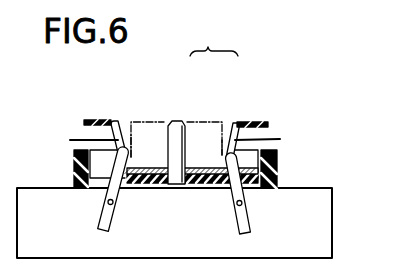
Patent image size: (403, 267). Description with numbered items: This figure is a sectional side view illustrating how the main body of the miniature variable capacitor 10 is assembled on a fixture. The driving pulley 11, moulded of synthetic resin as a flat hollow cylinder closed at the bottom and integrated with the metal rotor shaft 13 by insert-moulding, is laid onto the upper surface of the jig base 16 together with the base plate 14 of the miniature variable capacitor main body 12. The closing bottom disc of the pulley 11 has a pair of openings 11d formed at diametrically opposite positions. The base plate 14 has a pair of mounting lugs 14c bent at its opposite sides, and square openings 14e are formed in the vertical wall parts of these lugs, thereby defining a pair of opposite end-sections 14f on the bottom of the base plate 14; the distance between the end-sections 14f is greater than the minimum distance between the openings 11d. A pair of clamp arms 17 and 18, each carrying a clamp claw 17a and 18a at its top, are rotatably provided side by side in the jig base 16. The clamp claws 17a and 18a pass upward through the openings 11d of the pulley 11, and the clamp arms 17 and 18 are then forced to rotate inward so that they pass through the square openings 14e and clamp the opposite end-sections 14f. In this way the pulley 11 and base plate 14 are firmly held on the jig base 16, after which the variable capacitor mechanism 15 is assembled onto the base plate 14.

The miniature variable capacitor 10 is at (179, 108).
The driving pulley 11 is at (194, 196).
The openings 11d is at (128, 190).
The miniature variable capacitor main body 12 is at (180, 96).
The rotor shaft 13 is at (165, 127).
The base plate 14 is at (177, 108).
The mounting lugs 14c is at (89, 119).
The square openings 14e is at (177, 139).
The opposite end-sections 14f is at (154, 182).
The variable capacitor mechanism 15 is at (198, 122).
The jig base 16 is at (336, 216).
The clamp arm 17 is at (98, 221).
The clamp claw 17a is at (132, 120).
The clamp arm 18 is at (252, 221).
The clamp claw 18a is at (223, 162).